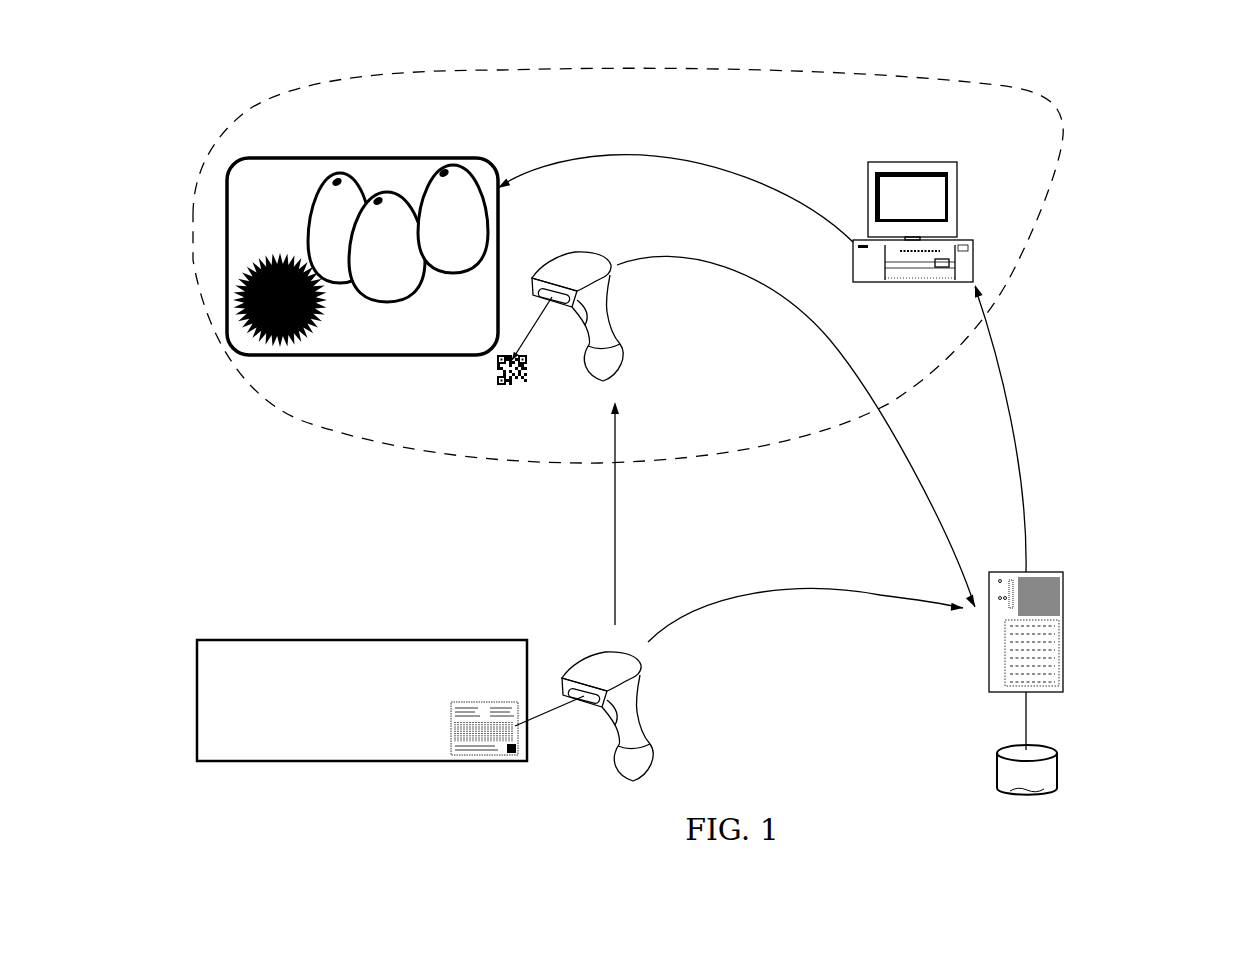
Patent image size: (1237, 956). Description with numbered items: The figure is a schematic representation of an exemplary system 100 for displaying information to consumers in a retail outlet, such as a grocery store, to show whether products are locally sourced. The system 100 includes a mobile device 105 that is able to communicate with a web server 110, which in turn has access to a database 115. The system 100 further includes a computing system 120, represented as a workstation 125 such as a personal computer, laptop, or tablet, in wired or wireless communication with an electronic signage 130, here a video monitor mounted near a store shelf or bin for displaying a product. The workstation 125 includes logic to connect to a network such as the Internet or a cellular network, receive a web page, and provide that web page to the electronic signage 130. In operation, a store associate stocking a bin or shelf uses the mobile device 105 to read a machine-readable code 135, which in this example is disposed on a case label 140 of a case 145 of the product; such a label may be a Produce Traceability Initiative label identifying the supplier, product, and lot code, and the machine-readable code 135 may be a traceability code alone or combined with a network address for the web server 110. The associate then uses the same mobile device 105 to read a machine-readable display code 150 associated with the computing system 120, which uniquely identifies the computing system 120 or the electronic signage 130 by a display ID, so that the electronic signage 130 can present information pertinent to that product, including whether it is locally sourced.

The system 100 is at (1127, 128).
The mobile device 105 is at (613, 327).
The web server 110 is at (1048, 572).
The database 115 is at (1027, 770).
The computing system 120 is at (1010, 277).
The workstation 125 is at (943, 162).
The electronic signage 130 is at (440, 158).
The machine-readable code 135 is at (452, 728).
The case label 140 is at (450, 720).
The case 145 is at (450, 640).
The machine-readable display code 150 is at (497, 370).